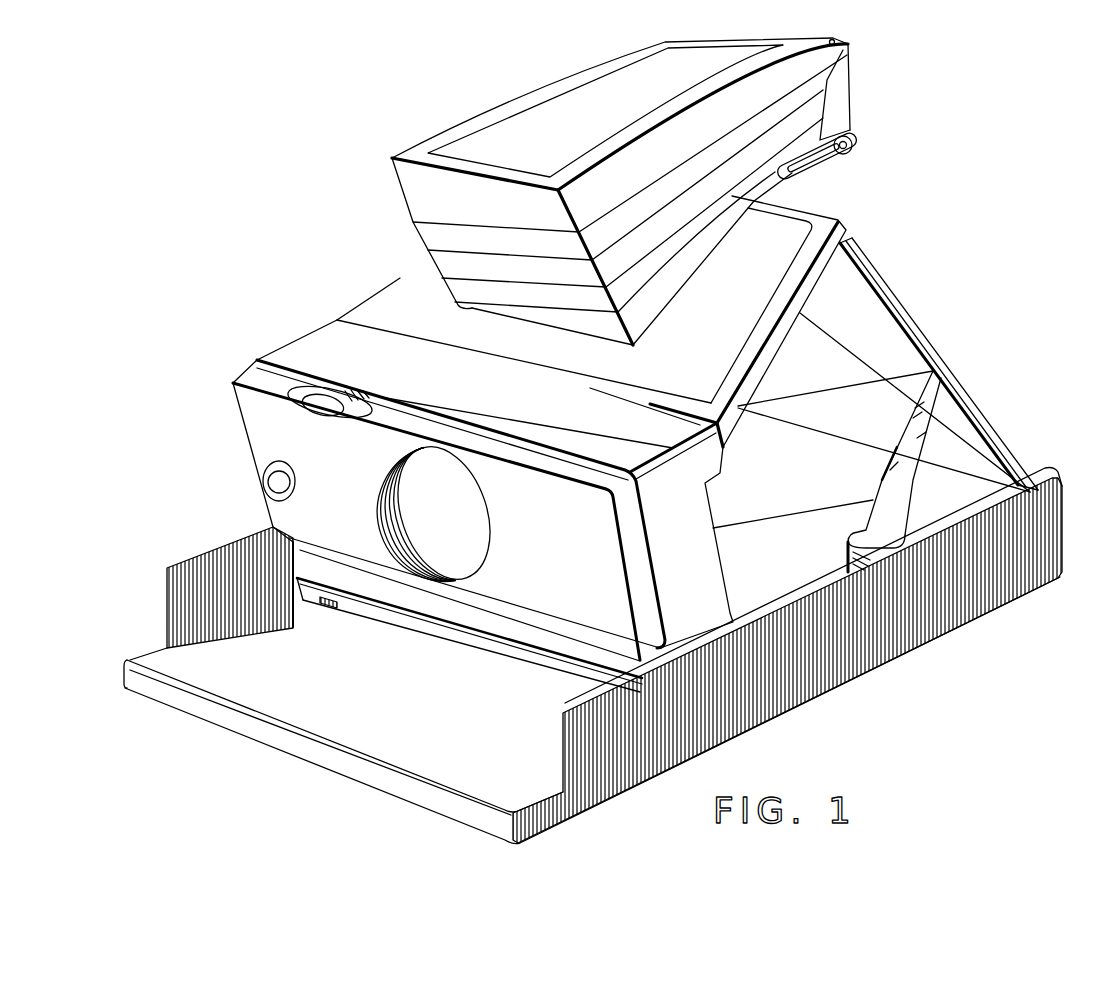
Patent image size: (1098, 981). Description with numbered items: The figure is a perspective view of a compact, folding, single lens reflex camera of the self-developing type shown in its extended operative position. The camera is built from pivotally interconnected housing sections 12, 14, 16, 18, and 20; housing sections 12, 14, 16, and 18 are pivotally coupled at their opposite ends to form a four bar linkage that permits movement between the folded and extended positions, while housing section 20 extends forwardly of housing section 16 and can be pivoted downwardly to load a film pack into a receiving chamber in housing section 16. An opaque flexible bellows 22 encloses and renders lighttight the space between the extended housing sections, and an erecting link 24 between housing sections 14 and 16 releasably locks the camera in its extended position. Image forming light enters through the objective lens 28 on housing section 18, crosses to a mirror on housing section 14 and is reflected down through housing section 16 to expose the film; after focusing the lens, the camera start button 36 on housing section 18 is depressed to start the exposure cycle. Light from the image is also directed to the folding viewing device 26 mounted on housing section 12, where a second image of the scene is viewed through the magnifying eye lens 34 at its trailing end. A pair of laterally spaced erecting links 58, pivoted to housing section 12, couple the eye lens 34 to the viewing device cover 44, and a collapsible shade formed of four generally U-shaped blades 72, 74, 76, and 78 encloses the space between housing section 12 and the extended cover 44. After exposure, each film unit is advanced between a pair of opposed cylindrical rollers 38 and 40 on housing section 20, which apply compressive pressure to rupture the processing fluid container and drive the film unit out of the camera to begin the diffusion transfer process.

The housing section 12 is at (782, 230).
The housing section 14 is at (928, 354).
The housing section 16 is at (973, 598).
The housing section 18 is at (688, 510).
The housing section 20 is at (624, 770).
The bellows 22 is at (822, 490).
The erecting link 24 is at (870, 529).
The folding viewing device 26 is at (635, 181).
The objective lens 28 is at (458, 518).
The magnifying eye lens 34 is at (812, 112).
The camera start button 36 is at (262, 487).
The cylindrical roller 38 is at (351, 560).
The cylindrical roller 40 is at (372, 585).
The viewing device cover 44 is at (703, 65).
The erecting links 58 is at (833, 164).
The U-shaped blade 72 is at (448, 224).
The U-shaped blade 74 is at (455, 250).
The U-shaped blade 76 is at (460, 276).
The U-shaped blade 78 is at (475, 297).